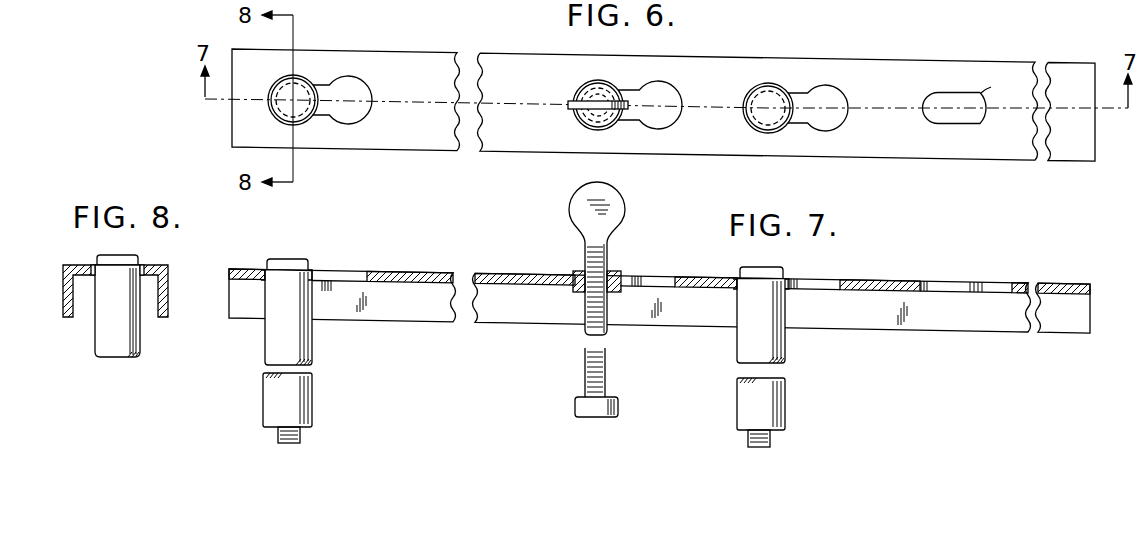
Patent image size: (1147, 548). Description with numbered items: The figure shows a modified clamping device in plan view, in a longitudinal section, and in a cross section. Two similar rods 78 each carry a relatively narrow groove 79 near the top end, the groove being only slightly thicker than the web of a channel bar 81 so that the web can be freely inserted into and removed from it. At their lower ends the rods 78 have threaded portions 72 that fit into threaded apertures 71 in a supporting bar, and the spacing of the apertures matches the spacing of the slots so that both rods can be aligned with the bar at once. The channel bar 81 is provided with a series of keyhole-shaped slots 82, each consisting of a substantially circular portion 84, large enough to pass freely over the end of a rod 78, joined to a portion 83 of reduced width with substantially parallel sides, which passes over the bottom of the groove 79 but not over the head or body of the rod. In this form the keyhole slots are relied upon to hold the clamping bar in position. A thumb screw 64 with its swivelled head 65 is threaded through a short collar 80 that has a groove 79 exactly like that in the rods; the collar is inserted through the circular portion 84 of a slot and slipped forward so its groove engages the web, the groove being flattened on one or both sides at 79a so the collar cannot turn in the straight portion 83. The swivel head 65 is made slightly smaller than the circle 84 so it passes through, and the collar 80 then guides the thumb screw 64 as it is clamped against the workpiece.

In FIG. 6, the thumb screw 64 is at (577, 107).
In FIG. 7, the swivelled head 65 is at (580, 407).
In FIG. 6, the threaded aperture 71 is at (769, 10).
In FIG. 7, the threaded portion 72 is at (302, 437).
In FIG. 8, the rod 78 is at (100, 340).
In FIG. 7, the rod 78 is at (300, 351).
In FIG. 6, the groove 79 is at (303, 90).
In FIG. 8, the groove 79 is at (143, 270).
In FIG. 7, the groove 79 is at (307, 276).
In FIG. 6, the flattened side of groove 79a is at (612, 86).
In FIG. 6, the short collar 80 is at (598, 80).
In FIG. 7, the short collar 80 is at (578, 274).
In FIG. 6, the channel bar 81 is at (869, 77).
In FIG. 8, the channel bar 81 is at (75, 266).
In FIG. 7, the channel bar 81 is at (492, 280).
In FIG. 6, the slot 82 is at (353, 118).
In FIG. 7, the slot 82 is at (353, 277).
In FIG. 6, the portion of reduced width 83 is at (945, 120).
In FIG. 7, the portion of reduced width 83 is at (940, 290).
In FIG. 6, the circular portion 84 is at (994, 100).